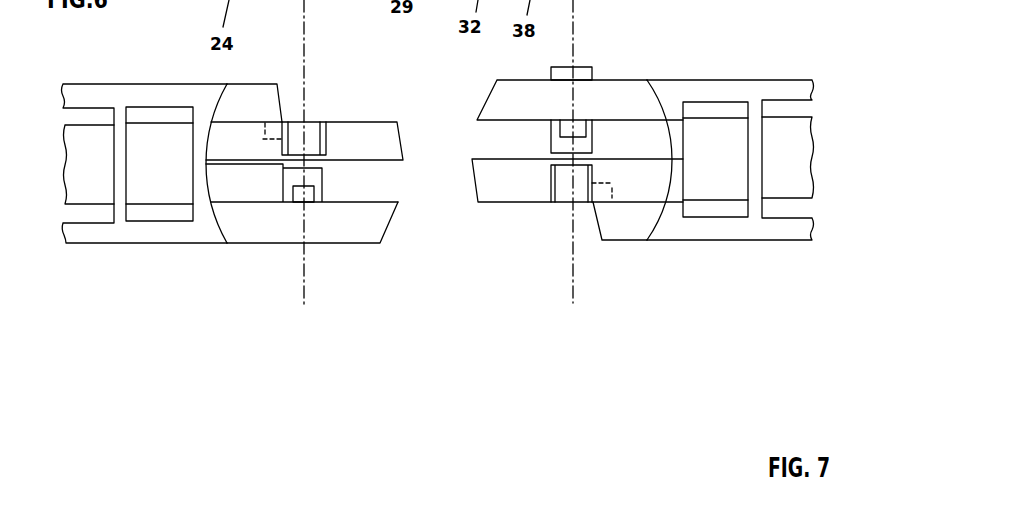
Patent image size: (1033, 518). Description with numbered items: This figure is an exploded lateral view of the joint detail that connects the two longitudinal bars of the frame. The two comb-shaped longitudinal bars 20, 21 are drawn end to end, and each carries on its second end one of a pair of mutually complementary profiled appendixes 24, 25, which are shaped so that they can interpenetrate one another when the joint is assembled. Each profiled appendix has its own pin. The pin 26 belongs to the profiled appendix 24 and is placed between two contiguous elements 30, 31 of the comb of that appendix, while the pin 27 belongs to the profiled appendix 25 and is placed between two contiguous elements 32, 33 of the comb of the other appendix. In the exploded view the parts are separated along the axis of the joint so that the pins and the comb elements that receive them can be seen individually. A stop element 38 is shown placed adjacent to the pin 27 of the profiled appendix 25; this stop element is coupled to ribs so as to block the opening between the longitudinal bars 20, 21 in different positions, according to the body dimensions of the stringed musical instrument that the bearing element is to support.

The longitudinal bar 20 is at (99, 229).
The longitudinal bar 21 is at (777, 227).
The profiled appendix 24 is at (255, 103).
The profiled appendix 25 is at (631, 219).
The pin 26 is at (318, 172).
The pin 27 is at (587, 146).
The contiguous element 30 is at (378, 139).
The contiguous element 31 is at (380, 216).
The contiguous element 32 is at (499, 101).
The contiguous element 33 is at (508, 183).
The stop element 38 is at (578, 126).